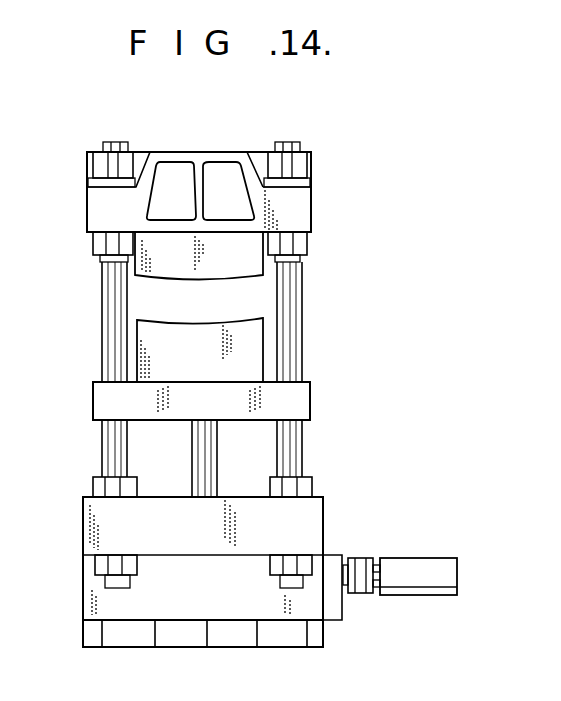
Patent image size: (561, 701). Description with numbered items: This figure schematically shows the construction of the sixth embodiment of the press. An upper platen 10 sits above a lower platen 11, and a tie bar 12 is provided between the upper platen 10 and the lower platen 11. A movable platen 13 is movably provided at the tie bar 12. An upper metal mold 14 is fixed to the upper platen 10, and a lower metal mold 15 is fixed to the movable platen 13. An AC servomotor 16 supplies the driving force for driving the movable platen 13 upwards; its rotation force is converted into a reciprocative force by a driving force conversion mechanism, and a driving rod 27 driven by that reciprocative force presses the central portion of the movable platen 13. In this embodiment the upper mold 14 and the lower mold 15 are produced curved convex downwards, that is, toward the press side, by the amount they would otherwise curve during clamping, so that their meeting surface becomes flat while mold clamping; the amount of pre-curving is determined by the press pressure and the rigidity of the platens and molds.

The upper platen 10 is at (305, 198).
The lower platen 11 is at (317, 523).
The tie bar 12 is at (297, 281).
The movable platen 13 is at (305, 393).
The upper metal mold 14 is at (223, 252).
The lower metal mold 15 is at (152, 342).
The AC servomotor 16 is at (428, 565).
The driving rod 27 is at (210, 462).